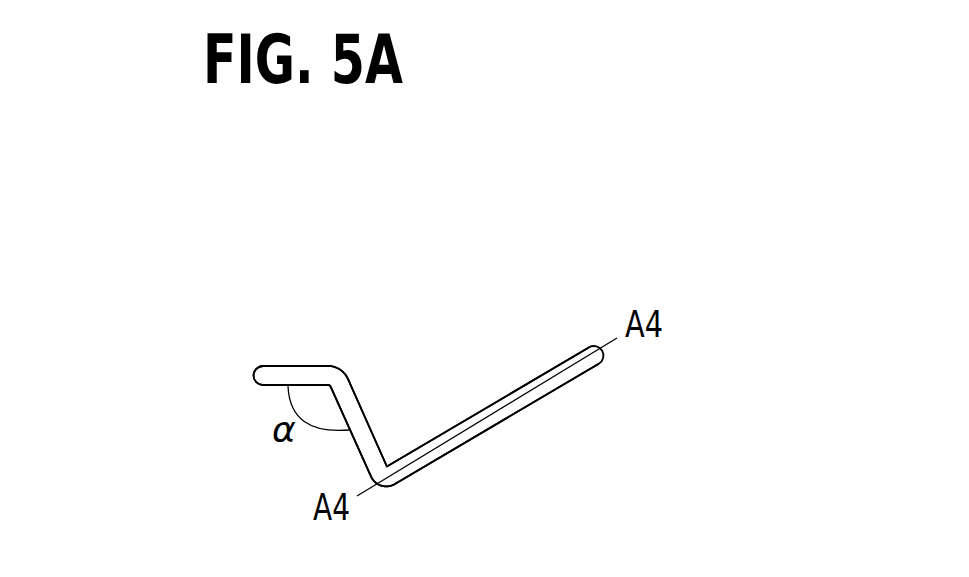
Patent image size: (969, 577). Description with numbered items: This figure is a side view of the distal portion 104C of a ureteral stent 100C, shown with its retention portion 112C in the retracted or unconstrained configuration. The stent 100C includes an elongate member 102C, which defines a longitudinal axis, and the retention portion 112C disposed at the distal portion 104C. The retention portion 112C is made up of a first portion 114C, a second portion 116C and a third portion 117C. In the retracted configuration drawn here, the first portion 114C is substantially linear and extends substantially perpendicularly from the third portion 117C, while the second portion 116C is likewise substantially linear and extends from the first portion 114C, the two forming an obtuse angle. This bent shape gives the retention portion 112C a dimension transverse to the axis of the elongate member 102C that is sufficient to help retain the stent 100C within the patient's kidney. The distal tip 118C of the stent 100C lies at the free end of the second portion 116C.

The ureteral stent 100C is at (147, 297).
The elongate member 102C is at (543, 397).
The distal portion 104C is at (308, 455).
The retention portion 112C is at (278, 367).
The first portion 114C is at (366, 416).
The second portion 116C is at (303, 365).
The third portion 117C is at (460, 446).
The distal tip 118C is at (254, 380).